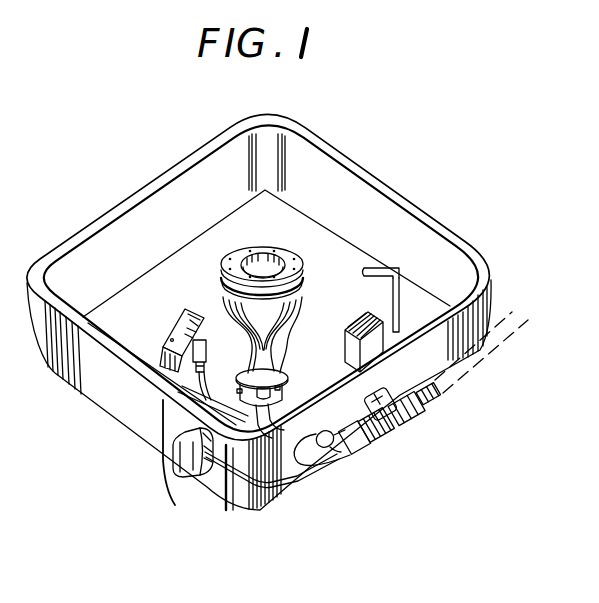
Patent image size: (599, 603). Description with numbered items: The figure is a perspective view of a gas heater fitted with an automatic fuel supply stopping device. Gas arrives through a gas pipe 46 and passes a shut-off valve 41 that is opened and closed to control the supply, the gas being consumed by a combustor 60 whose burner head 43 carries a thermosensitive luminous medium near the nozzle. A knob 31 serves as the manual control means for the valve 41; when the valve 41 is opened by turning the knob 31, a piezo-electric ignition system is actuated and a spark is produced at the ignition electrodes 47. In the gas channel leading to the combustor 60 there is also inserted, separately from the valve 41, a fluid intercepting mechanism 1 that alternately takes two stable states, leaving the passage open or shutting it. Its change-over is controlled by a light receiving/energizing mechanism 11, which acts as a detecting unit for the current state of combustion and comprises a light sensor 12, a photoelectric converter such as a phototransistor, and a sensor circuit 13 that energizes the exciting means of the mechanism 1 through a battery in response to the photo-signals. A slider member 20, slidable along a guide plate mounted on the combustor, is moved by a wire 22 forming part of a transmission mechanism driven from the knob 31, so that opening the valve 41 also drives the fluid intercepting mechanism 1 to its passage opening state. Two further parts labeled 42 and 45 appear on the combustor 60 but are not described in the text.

The fluid intercepting mechanism 1 is at (402, 435).
The light receiving/energizing mechanism 11 is at (402, 311).
The light sensor 12 is at (370, 270).
The sensor circuit 13 is at (360, 330).
The slider member 20 is at (412, 414).
The wire 22 is at (300, 484).
The knob 31 is at (178, 473).
The shut-off valve 41 is at (233, 392).
The base flange 42 is at (273, 365).
The burner head 43 is at (306, 290).
The cup opening ring 45 is at (270, 247).
The gas pipe 46 is at (495, 346).
The ignition electrodes 47 is at (173, 327).
The combustor 60 is at (256, 323).